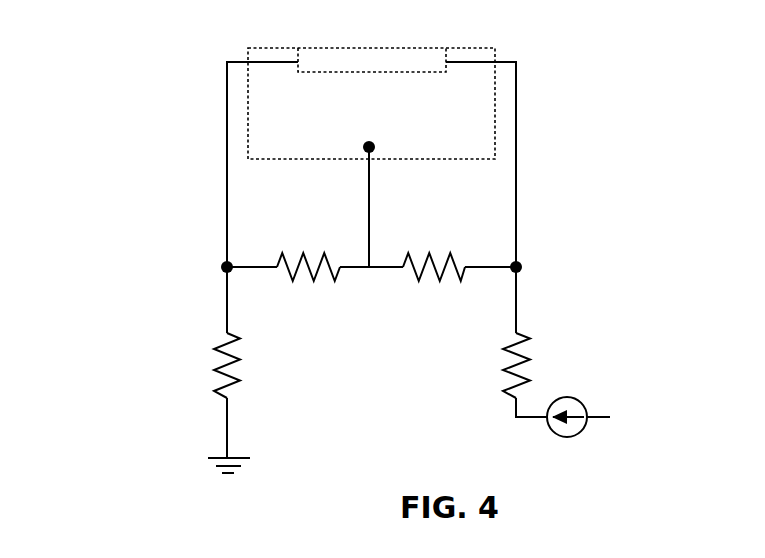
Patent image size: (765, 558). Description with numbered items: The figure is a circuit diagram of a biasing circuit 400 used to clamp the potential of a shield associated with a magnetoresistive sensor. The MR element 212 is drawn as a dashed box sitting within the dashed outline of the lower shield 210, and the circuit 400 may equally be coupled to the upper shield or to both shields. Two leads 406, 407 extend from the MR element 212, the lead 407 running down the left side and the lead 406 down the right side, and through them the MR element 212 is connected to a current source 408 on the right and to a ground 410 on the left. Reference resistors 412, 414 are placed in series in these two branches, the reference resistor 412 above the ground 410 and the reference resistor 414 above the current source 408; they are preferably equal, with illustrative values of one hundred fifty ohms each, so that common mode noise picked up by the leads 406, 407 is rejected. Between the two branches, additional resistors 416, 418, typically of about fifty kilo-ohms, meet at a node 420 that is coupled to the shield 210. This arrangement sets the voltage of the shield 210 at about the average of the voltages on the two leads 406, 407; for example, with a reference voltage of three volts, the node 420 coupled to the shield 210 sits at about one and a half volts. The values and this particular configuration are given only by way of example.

The biasing circuit 400 is at (114, 109).
The lower shield 210 is at (479, 47).
The MR element 212 is at (399, 57).
The lead 407 is at (227, 135).
The lead 406 is at (516, 145).
The node 420 is at (372, 202).
The additional resistor 416 is at (302, 252).
The additional resistor 418 is at (428, 253).
The reference resistor 412 is at (238, 362).
The ground 410 is at (227, 418).
The reference resistor 414 is at (503, 372).
The current source 408 is at (612, 394).